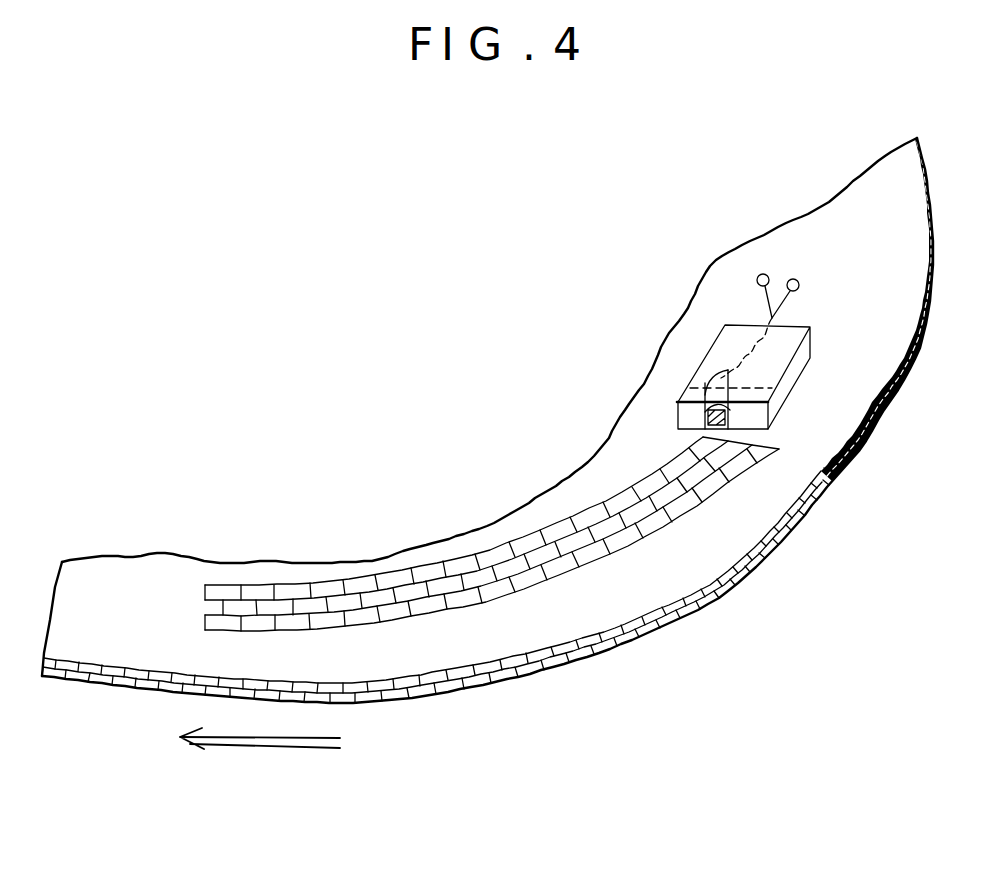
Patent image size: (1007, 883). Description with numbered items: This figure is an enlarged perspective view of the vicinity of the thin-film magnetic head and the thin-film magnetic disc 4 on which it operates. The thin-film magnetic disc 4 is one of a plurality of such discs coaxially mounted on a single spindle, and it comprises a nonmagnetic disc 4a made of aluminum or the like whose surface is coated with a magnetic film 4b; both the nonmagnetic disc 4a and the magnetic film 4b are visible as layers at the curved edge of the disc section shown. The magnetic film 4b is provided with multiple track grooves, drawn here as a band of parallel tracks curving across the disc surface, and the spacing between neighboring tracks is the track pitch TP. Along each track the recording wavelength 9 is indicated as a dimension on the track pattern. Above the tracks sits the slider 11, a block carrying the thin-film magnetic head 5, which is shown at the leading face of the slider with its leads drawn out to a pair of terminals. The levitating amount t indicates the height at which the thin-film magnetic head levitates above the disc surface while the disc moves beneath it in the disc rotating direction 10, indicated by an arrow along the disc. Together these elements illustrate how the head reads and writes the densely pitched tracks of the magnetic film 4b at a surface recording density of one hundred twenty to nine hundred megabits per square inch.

The thin-film magnetic disc 4 is at (713, 597).
The nonmagnetic disc 4a is at (400, 700).
The magnetic film 4b is at (118, 688).
The magnetic head 5 is at (683, 402).
The recording wavelength 9 is at (402, 534).
The disc rotating direction 10 is at (290, 747).
The slider 11 is at (715, 358).
The track pitch TP is at (193, 607).
The levitating amount t is at (825, 400).